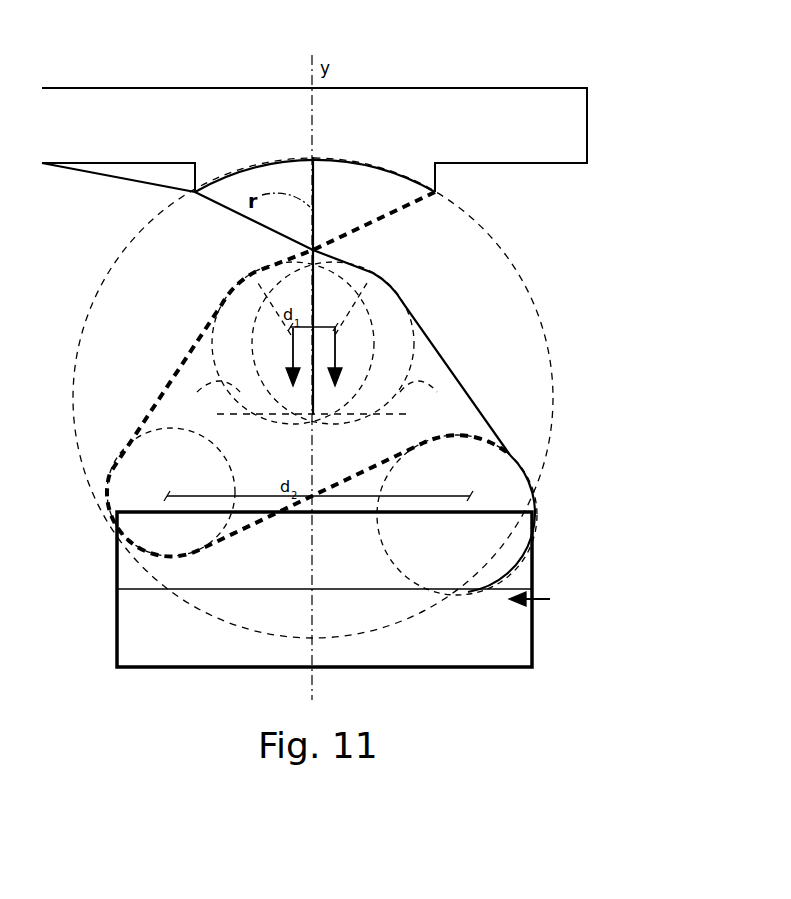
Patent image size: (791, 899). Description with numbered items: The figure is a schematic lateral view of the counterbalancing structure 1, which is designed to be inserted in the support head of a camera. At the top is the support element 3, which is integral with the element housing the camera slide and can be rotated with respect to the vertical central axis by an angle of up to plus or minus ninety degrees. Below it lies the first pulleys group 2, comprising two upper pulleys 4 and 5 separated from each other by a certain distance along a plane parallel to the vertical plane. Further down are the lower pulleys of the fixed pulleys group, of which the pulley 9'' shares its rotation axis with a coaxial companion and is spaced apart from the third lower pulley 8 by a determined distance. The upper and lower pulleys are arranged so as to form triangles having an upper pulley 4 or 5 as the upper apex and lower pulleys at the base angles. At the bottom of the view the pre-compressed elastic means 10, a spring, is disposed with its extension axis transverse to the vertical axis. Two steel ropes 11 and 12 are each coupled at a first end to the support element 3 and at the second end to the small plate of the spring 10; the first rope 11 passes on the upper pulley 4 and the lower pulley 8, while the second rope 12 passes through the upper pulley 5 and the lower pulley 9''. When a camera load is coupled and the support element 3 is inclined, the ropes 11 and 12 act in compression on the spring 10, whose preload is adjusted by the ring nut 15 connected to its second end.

The counterbalancing structure 1 is at (630, 113).
The first pulleys group 2 is at (226, 287).
The support element 3 is at (450, 113).
The upper pulley 4 is at (182, 403).
The upper pulley 5 is at (436, 407).
The lower pulley 8 is at (103, 480).
The lower pulley 9'' is at (502, 495).
The pre-compressed elastic means 10 is at (437, 654).
The first rope 11 is at (156, 403).
The second rope 12 is at (460, 380).
The ring nut 15 is at (533, 627).